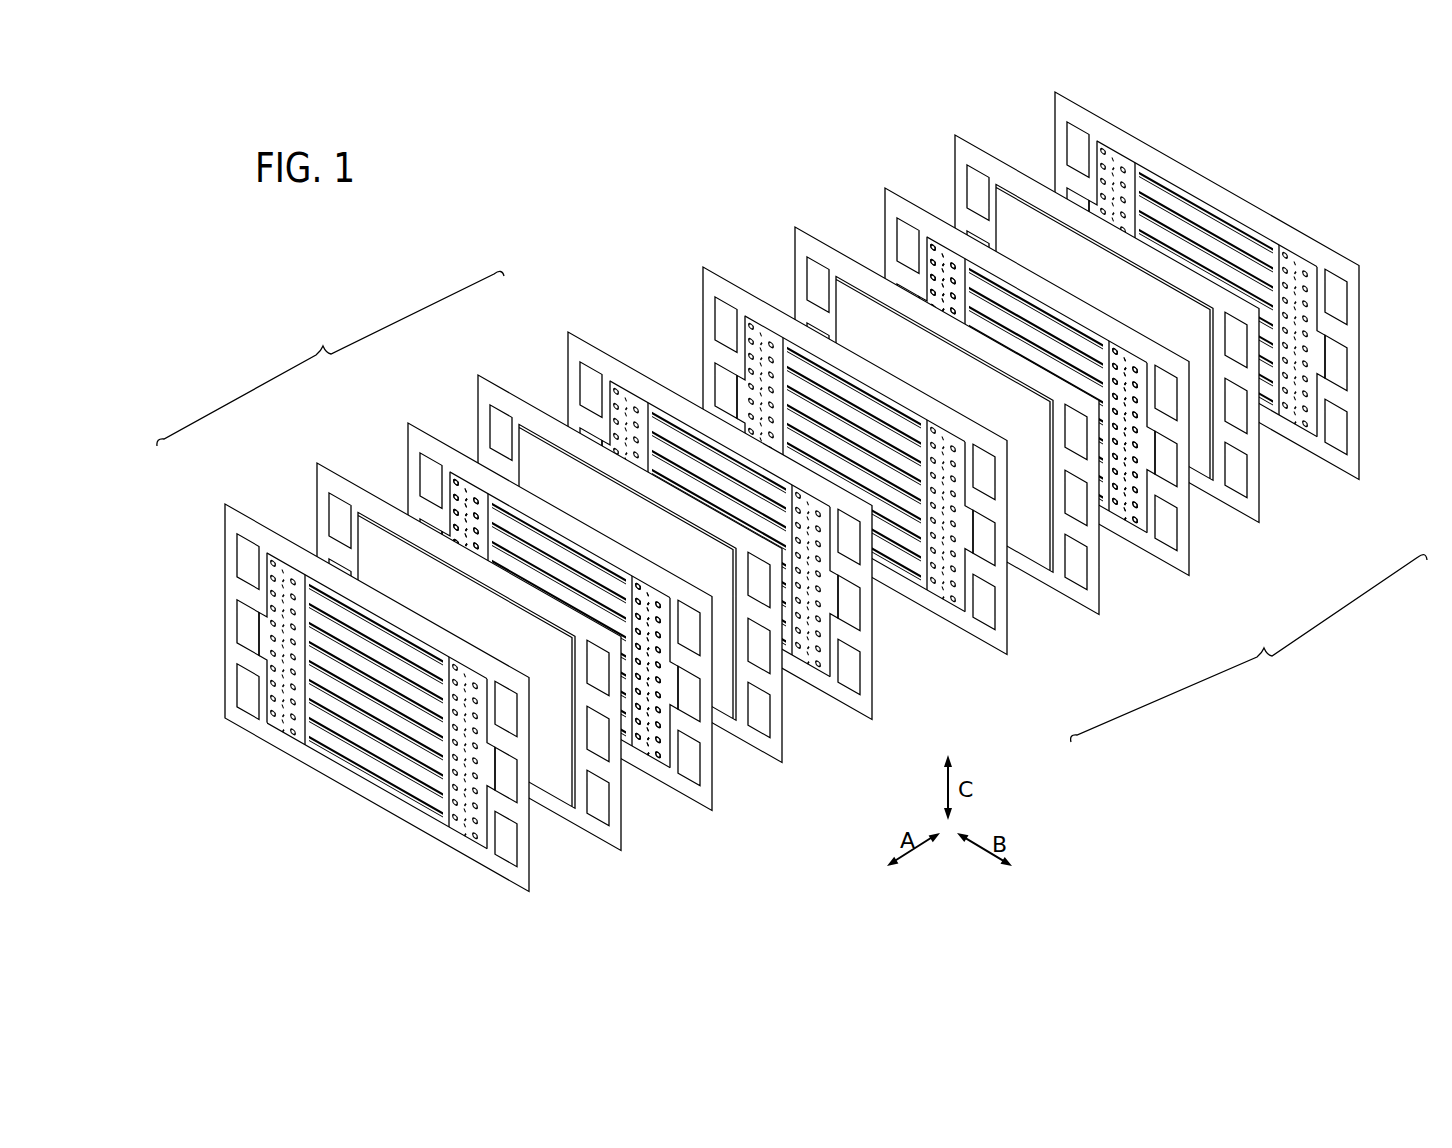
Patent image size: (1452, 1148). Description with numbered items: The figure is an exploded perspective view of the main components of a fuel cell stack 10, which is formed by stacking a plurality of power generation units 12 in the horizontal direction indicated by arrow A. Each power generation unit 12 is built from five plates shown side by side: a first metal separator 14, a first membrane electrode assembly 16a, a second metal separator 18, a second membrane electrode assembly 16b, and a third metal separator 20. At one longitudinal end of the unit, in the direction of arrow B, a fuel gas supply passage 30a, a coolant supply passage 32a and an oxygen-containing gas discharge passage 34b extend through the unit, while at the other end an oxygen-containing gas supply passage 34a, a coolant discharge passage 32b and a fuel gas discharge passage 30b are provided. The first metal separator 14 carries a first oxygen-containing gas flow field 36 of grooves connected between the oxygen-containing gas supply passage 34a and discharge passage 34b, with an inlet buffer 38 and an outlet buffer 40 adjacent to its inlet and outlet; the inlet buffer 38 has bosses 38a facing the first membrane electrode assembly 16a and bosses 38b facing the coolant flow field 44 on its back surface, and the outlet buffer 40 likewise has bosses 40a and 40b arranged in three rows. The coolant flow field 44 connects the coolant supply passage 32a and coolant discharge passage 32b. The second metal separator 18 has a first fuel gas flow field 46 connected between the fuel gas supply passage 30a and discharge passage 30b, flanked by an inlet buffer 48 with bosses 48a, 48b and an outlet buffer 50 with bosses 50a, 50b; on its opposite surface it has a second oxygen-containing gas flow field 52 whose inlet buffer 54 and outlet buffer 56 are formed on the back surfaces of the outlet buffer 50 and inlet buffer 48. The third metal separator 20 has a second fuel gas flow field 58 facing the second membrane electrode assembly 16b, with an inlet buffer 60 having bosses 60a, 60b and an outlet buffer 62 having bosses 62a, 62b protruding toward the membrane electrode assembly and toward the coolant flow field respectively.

The fuel cell stack 10 is at (443, 211).
The power generation unit 12 is at (792, 506).
The first metal separator 14 is at (224, 502).
The first membrane electrode assembly 16a is at (315, 463).
The second metal separator 18 is at (406, 422).
The second membrane electrode assembly 16b is at (477, 374).
The third metal separator 20 is at (567, 331).
The fuel gas supply passage 30a is at (243, 553).
The fuel gas discharge passage 30b is at (508, 844).
The coolant supply passage 32a is at (243, 615).
The coolant discharge passage 32b is at (504, 774).
The oxygen-containing gas supply passage 34a is at (508, 717).
The oxygen-containing gas discharge passage 34b is at (243, 680).
The first oxygen-containing gas flow field 36 is at (379, 714).
The inlet buffer 38 is at (465, 829).
The bosses 38a is at (487, 678).
The bosses 38b is at (451, 657).
The outlet buffer 40 is at (238, 479).
The bosses 40a is at (268, 552).
The bosses 40b is at (304, 578).
The coolant flow field 44 is at (336, 743).
The first fuel gas flow field 46 is at (568, 570).
The inlet buffer 48 is at (450, 502).
The bosses 48a is at (481, 483).
The bosses 48b is at (458, 496).
The outlet buffer 50 is at (652, 755).
The bosses 50a is at (638, 586).
The bosses 50b is at (670, 588).
The second oxygen-containing gas flow field 52 is at (531, 536).
The inlet buffer 54 is at (903, 601).
The outlet buffer 56 is at (644, 408).
The second fuel gas flow field 58 is at (688, 446).
The inlet buffer 60 is at (606, 292).
The bosses 60a is at (620, 385).
The bosses 60b is at (645, 400).
The outlet buffer 62 is at (867, 752).
The bosses 62a is at (817, 665).
The bosses 62b is at (800, 670).